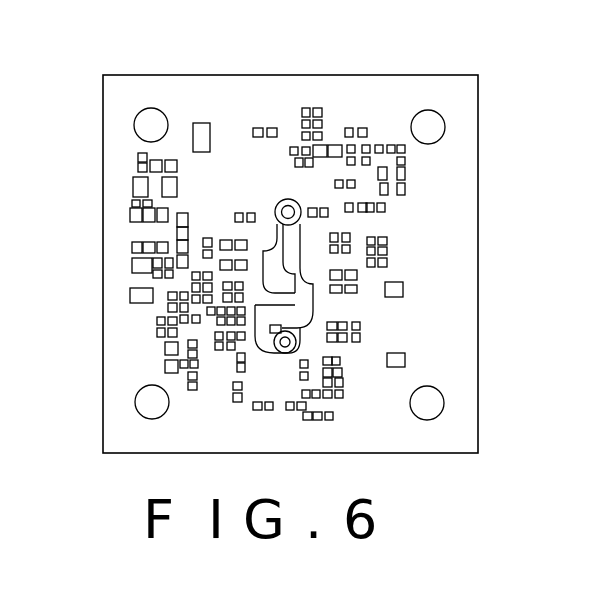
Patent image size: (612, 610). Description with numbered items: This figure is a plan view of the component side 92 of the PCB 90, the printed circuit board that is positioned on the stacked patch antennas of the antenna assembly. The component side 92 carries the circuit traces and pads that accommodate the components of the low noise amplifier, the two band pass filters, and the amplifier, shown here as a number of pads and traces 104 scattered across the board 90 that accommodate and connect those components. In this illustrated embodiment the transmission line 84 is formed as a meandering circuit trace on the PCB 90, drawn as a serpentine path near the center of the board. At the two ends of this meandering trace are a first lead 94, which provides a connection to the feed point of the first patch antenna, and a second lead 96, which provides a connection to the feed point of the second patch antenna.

The PCB 90 is at (155, 75).
The component side 92 is at (408, 97).
The transmission line 84 is at (270, 237).
The first lead 94 is at (288, 199).
The second lead 96 is at (290, 353).
The pads and traces 104 is at (133, 185).